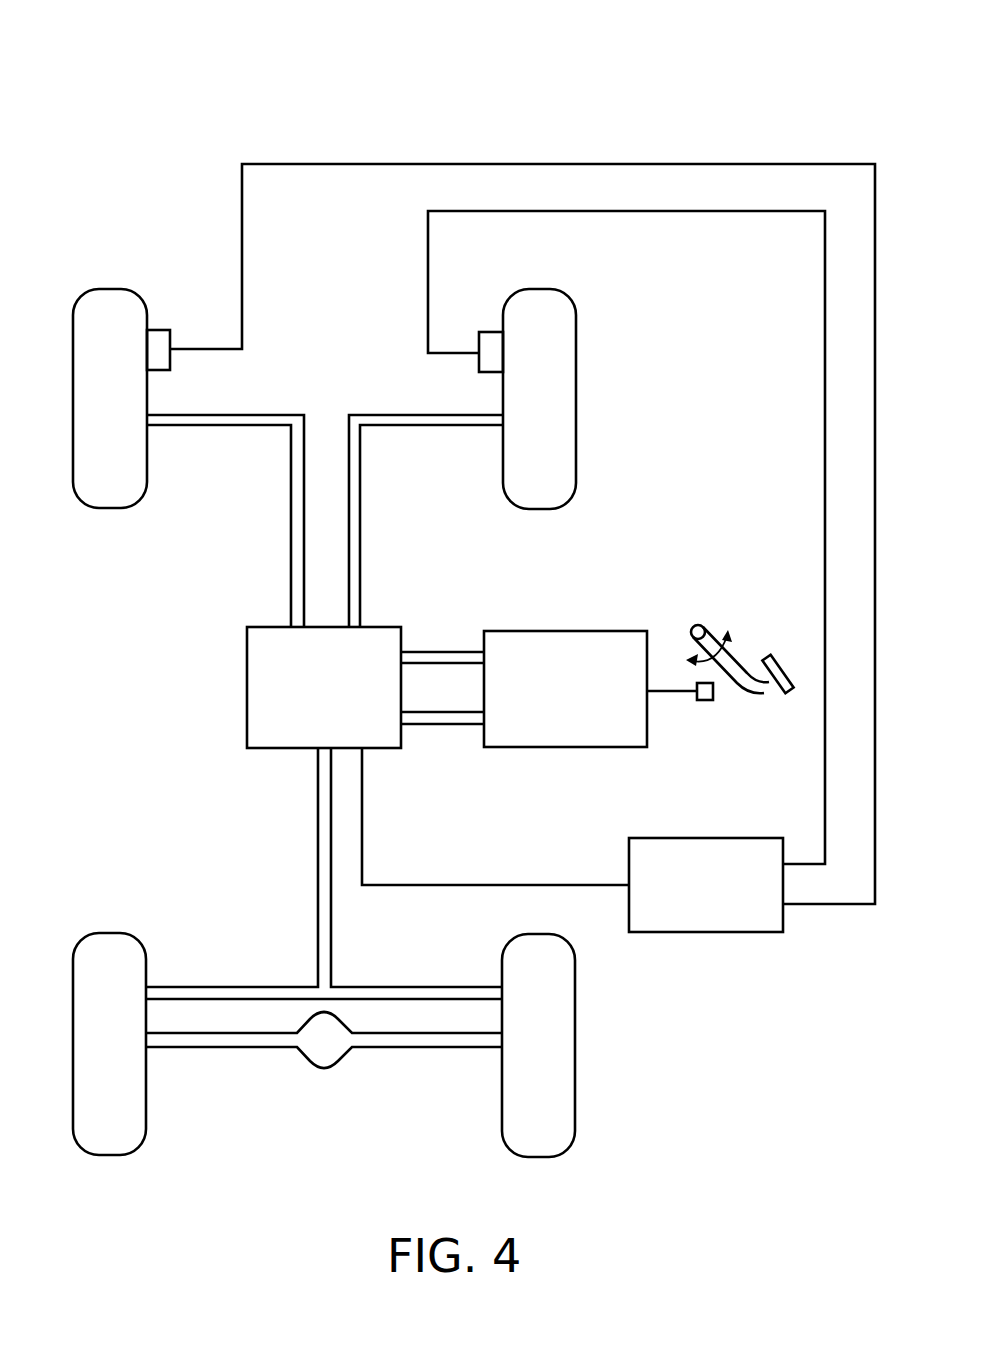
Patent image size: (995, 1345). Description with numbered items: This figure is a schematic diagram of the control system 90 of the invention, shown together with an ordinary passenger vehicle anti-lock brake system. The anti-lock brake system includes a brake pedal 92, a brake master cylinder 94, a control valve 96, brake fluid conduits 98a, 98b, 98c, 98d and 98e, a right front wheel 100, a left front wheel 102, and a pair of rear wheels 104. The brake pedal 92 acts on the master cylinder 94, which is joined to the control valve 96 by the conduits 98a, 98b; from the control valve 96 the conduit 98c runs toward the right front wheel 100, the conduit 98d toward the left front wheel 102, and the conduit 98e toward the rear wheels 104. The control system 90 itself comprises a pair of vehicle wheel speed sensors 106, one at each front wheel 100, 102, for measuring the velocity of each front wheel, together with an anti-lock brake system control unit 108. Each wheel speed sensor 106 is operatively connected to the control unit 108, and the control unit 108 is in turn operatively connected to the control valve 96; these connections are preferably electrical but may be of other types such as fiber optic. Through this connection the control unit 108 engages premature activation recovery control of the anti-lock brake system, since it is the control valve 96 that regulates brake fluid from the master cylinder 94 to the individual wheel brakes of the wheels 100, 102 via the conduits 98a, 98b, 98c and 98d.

The control system 90 is at (348, 106).
The brake pedal 92 is at (743, 660).
The brake master cylinder 94 is at (592, 631).
The control valve 96 is at (247, 680).
The brake fluid conduit 98a is at (444, 650).
The brake fluid conduit 98b is at (438, 727).
The brake fluid conduit 98c is at (361, 522).
The brake fluid conduit 98d is at (290, 538).
The brake fluid conduit 98e is at (332, 938).
The right front wheel 100 is at (577, 357).
The left front wheel 102 is at (104, 287).
The rear wheels 104 is at (121, 933).
The vehicle wheel speed sensors 106 is at (162, 327).
The anti-lock brake system control unit 108 is at (752, 838).